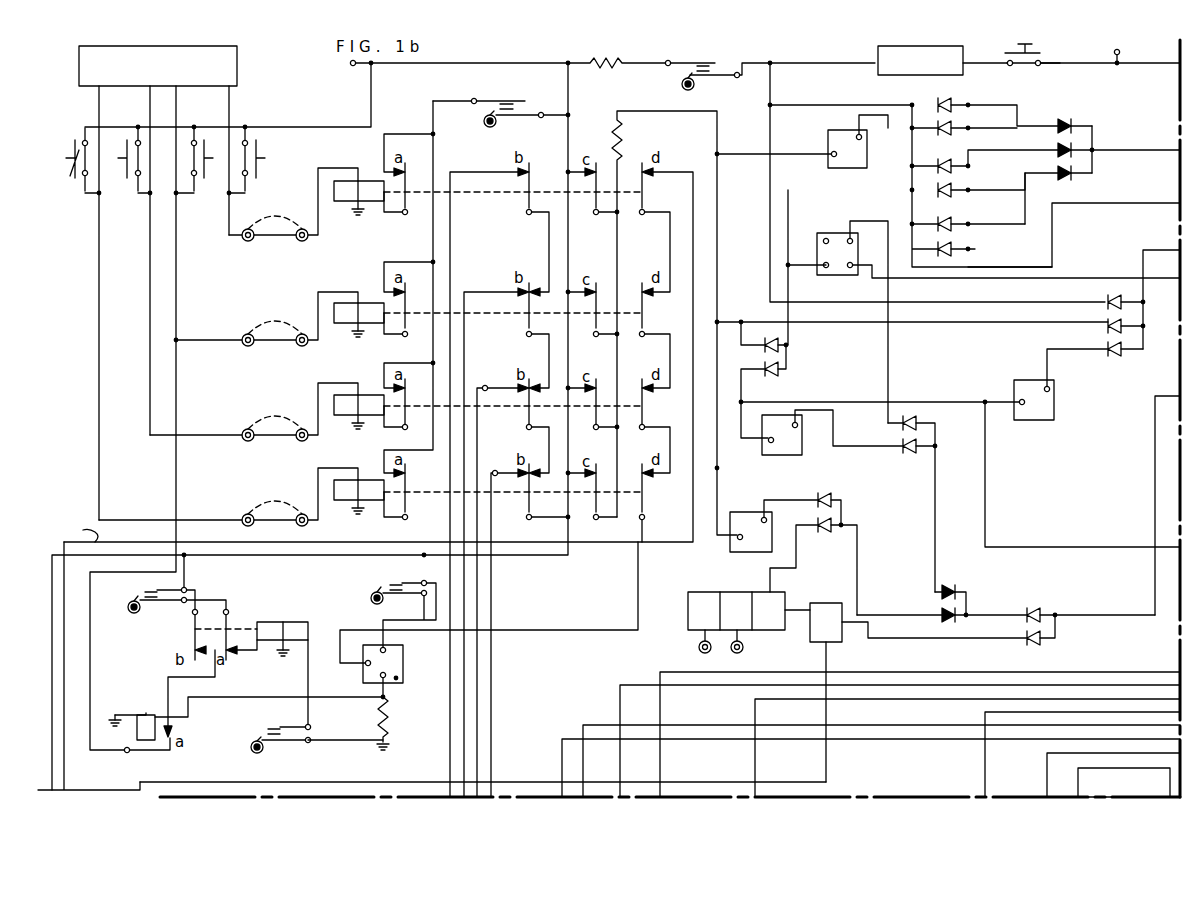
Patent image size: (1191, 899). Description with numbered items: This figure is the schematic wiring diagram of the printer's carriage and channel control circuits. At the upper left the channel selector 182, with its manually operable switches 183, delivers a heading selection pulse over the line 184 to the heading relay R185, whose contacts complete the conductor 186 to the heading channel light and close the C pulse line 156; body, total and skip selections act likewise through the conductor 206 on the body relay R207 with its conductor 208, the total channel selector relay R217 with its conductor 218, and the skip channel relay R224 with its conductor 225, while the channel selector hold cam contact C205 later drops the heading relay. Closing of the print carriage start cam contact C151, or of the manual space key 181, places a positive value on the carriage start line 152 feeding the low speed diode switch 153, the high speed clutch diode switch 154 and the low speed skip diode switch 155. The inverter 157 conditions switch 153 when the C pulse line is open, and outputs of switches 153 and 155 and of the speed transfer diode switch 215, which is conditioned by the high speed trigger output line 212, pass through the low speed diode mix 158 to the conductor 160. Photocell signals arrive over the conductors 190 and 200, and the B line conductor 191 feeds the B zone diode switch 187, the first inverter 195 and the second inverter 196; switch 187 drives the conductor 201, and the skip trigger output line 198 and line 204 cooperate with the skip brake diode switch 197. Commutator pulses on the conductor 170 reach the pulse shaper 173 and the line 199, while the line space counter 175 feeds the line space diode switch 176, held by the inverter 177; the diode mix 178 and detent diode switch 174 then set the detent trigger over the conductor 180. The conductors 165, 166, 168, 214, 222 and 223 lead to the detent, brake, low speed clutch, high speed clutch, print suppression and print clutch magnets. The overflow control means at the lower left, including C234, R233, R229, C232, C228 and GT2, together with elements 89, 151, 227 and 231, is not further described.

The channel selector 182 is at (237, 66).
The manually operable switches 183 is at (70, 160).
The line 184 is at (236, 232).
The heading relay R185 is at (353, 180).
The indicator lamp 89 is at (496, 125).
The channel selector hold cam contact C205 is at (514, 98).
The print carriage start cam contact C151 is at (709, 62).
The indicator lamp 151 is at (684, 82).
The C pulse line 156 is at (690, 112).
The manual space key or switch 181 is at (1040, 52).
The carriage start line 152 is at (772, 100).
The low speed diode switch 153 is at (948, 116).
The low speed skip diode switch 155 is at (962, 172).
The speed transfer diode switch 215 is at (968, 243).
The low speed diode mix 158 is at (1076, 138).
The conductor 160 is at (1150, 150).
The output line of high speed trigger 212 is at (1060, 228).
The inverter 157 is at (828, 162).
The conductor 201 is at (835, 275).
The line 204 is at (960, 300).
The high speed clutch diode switch 154 is at (1130, 345).
The conductor 186 is at (450, 246).
The conductor 206 is at (176, 340).
The line 231 is at (176, 410).
The body relay R207 is at (353, 302).
The conductor 208 is at (464, 365).
The conductor 218 is at (485, 385).
The total channel selector relay R217 is at (354, 394).
The skip channel relay R224 is at (354, 481).
The conductor 225 is at (491, 490).
The B zone diode switch 187 is at (780, 369).
The B line conductor 191 is at (813, 400).
The second inverter 196 is at (802, 452).
The output line of skip trigger 198 is at (888, 375).
The skip brake diode switch 197 is at (925, 437).
The first inverter 195 is at (1054, 406).
The line 227 is at (644, 560).
The inverter 177 is at (754, 516).
The line space diode switch 176 is at (836, 510).
The pulse shaper 173 is at (834, 604).
The line space output device or counter 175 is at (766, 632).
The diode mix 178 is at (966, 602).
The conductor 180 is at (1138, 615).
The detent diode switch 174 is at (1055, 633).
The line 199 is at (990, 638).
The conductor 190 is at (692, 672).
The conductor 200 is at (645, 685).
The conductor 165 is at (608, 725).
The conductor 166 is at (562, 752).
The conductor 222 is at (755, 752).
The line 223 is at (985, 755).
The conductor 214 is at (1047, 765).
The conductor 168 is at (1148, 770).
The conductor 170 is at (240, 782).
The capacitor C234 is at (144, 588).
The resistor R233 is at (282, 663).
The resistor R229 is at (150, 718).
The capacitor C232 is at (296, 728).
The capacitor C228 is at (397, 580).
The gate GT2 is at (383, 664).